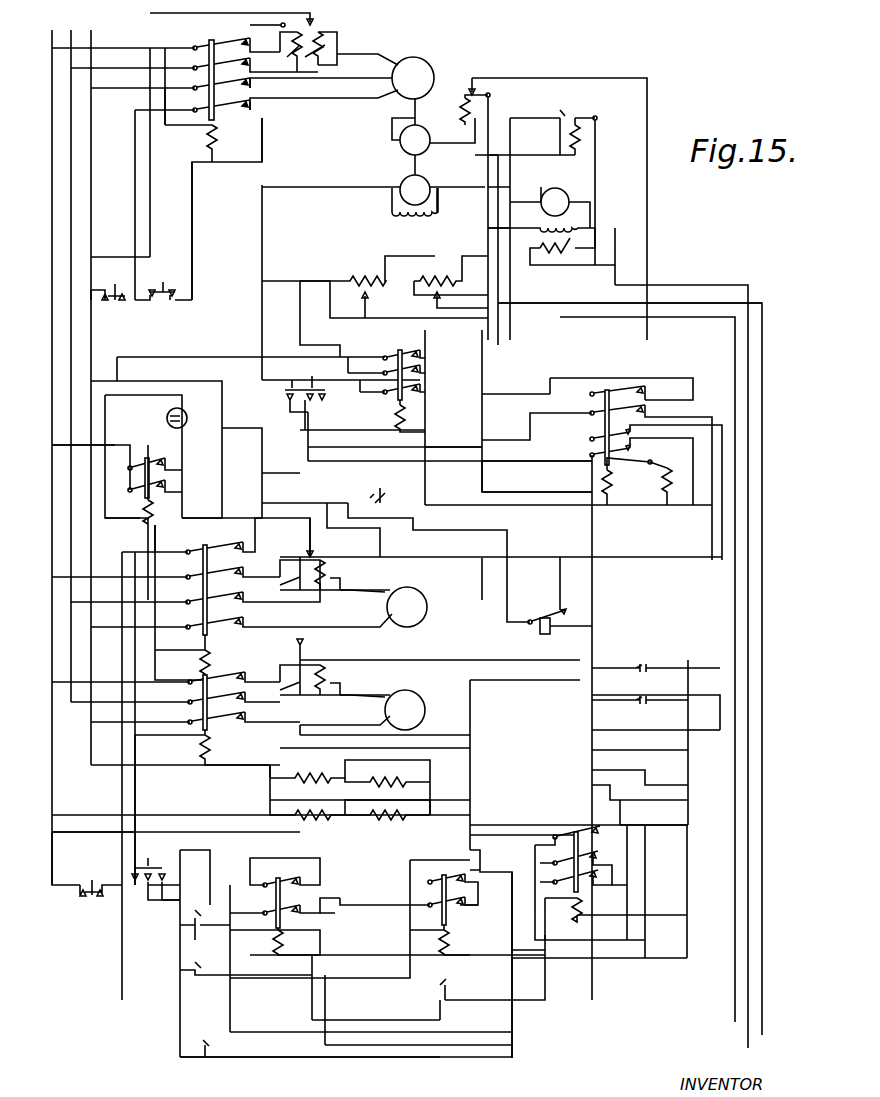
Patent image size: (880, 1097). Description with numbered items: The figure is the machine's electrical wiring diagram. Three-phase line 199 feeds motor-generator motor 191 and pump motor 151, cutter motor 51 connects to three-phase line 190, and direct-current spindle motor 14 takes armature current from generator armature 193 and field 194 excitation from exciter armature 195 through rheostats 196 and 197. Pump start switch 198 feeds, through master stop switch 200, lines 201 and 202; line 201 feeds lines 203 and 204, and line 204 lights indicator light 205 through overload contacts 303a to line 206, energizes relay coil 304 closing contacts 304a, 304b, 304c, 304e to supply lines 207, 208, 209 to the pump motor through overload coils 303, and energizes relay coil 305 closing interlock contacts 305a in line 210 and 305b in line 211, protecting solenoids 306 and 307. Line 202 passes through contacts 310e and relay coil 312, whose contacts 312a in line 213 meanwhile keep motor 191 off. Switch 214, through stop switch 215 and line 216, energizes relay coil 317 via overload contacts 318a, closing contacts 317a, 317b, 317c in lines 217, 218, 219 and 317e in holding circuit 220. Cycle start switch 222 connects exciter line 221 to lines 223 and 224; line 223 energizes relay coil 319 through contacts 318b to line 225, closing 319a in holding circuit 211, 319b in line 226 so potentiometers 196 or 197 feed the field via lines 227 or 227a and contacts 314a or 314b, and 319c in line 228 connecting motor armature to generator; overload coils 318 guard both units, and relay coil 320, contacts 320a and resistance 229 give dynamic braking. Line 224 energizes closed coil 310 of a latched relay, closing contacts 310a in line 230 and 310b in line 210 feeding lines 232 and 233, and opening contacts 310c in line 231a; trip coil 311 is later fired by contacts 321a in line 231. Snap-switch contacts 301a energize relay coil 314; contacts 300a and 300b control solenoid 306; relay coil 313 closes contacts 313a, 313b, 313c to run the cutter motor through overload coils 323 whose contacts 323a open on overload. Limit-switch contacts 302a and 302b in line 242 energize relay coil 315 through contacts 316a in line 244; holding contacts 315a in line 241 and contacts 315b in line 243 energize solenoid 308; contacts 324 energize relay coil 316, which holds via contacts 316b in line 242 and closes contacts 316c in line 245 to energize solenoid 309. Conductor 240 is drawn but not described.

The spindle motor 14 is at (560, 190).
The cutter motor 51 is at (420, 698).
The pump motor 151 is at (416, 594).
The power supply lines 190 is at (91, 182).
The motor generator motor 191 is at (426, 60).
The generator 193 is at (402, 146).
The spindle motor field 194 is at (545, 232).
The exciter 195 is at (392, 202).
The slow speed rheostat 196 is at (355, 272).
The fast speed rheostat 197 is at (437, 272).
The pump start switch 198 is at (128, 856).
The master stop switch 199 is at (52, 866).
The master stop contacts 200 is at (88, 900).
The conductor 201 is at (178, 888).
The conductor 202 is at (160, 900).
The conductor 203 is at (168, 765).
The conductor 204 is at (135, 810).
The signal lamp 205 is at (185, 412).
The conductor 206 is at (314, 510).
The conductor 207 is at (289, 575).
The conductor 208 is at (299, 606).
The conductor 209 is at (322, 628).
The conductor 210 is at (242, 455).
The conductor 211 is at (210, 492).
The conductor 213 is at (556, 547).
The MG start switch 214 is at (168, 302).
The MG stop switch 215 is at (115, 302).
The conductor 216 is at (192, 165).
The supply line 217 is at (124, 48).
The supply line 218 is at (134, 64).
The supply line 219 is at (120, 88).
The conductor 220 is at (264, 150).
The conductor 221 is at (262, 244).
The conductor 222 is at (286, 380).
The switch 223 is at (336, 408).
The conductor 224 is at (443, 462).
The conductor 225 is at (482, 384).
The rheostat tap 226 is at (352, 302).
The rheostat tap 227 is at (400, 312).
The conductor 227a is at (560, 317).
The conductor 228 is at (500, 118).
The resistor 229 is at (572, 265).
The conductor 230 is at (705, 520).
The conductor 231 is at (506, 504).
The conductor 231a is at (688, 378).
The limit switch 232 is at (704, 742).
The limit switch 233 is at (704, 719).
The conductor 240 is at (350, 978).
The conductor 241 is at (395, 915).
The conductor 242 is at (400, 1060).
The conductor 243 is at (482, 872).
The conductor 244 is at (660, 820).
The conductor 245 is at (504, 824).
The limit switch contact 300a is at (640, 672).
The limit switch contact 300b is at (640, 706).
The switch contact 301a is at (198, 928).
The switch contact 302a is at (206, 1058).
The switch contact 302b is at (186, 970).
The pump motor relay 303 is at (296, 586).
The relay contact 303a is at (291, 537).
The relay coil 304 is at (212, 660).
The relay contact 304a is at (166, 570).
The relay contact 304b is at (185, 595).
The relay contact 304c is at (195, 620).
The relay contact 304e is at (217, 536).
The relay coil 305 is at (140, 506).
The relay contact 305a is at (138, 460).
The relay contact 305b is at (170, 476).
The resistor 306 is at (350, 765).
The resistor 307 is at (362, 790).
The resistor 308 is at (350, 807).
The resistor 309 is at (370, 822).
The relay coil 310 is at (612, 482).
The relay contact 310a is at (600, 388).
The relay contact 310b is at (620, 392).
The relay contact 310c is at (592, 436).
The relay contact 310e is at (595, 453).
The relay coil 311 is at (660, 500).
The solenoid 312 is at (540, 632).
The switch contact 312a is at (542, 608).
The relay coil 313 is at (215, 745).
The relay contact 313a is at (166, 675).
The relay contact 313b is at (175, 696).
The relay contact 313c is at (195, 716).
The relay coil 314 is at (270, 950).
The relay contact 314a is at (278, 872).
The relay contact 314b is at (285, 904).
The relay coil 315 is at (438, 936).
The relay contact 315a is at (438, 886).
The relay contact 315b is at (441, 898).
The relay coil 316 is at (568, 912).
The relay contact 316a is at (609, 890).
The relay contact 316b is at (583, 866).
The relay contact 316c is at (576, 876).
The relay coil 317 is at (206, 140).
The relay contact 317a is at (214, 38).
The relay contact 317b is at (214, 61).
The relay contact 317c is at (214, 81).
The relay contact 317e is at (214, 103).
The resistors 318 is at (293, 58).
The contact 318a is at (316, 28).
The relay coil 318b is at (468, 90).
The relay coil 319 is at (396, 432).
The relay contact 319a is at (380, 354).
The relay contact 319b is at (380, 375).
The relay contact 319c is at (382, 396).
The resistor 320 is at (592, 144).
The contact 320a is at (590, 114).
The switch contact 321a is at (386, 496).
The cutter motor relay 323 is at (296, 690).
The relay contact 323a is at (322, 660).
The switch contact 324 is at (452, 996).